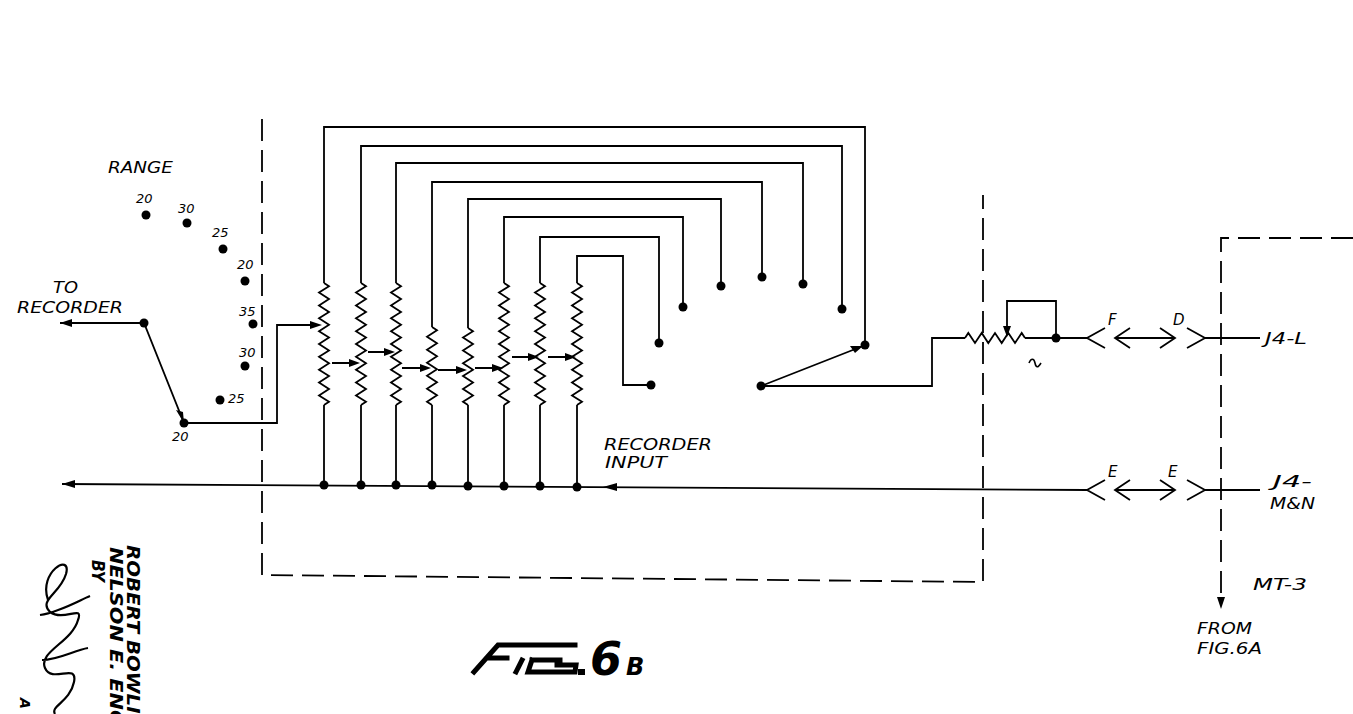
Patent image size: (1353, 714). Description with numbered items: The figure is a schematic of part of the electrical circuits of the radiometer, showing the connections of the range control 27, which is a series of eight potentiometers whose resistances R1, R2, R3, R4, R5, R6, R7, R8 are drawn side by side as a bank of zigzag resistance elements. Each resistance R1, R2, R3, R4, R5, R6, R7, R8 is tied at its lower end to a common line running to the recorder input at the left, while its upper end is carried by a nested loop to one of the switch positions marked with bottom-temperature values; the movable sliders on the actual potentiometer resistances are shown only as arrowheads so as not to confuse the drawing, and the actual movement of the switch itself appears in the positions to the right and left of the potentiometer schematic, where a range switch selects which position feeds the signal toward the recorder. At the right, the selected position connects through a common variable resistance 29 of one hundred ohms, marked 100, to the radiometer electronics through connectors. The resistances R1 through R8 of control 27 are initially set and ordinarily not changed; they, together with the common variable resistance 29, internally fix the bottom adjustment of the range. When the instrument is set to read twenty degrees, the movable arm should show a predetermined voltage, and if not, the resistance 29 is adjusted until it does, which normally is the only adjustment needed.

The range control 27 is at (641, 298).
The common variable resistance 29 is at (1026, 311).
The potentiometer resistance element 100 is at (1003, 351).
The potentiometer resistor R1 is at (323, 405).
The potentiometer resistor R2 is at (360, 405).
The potentiometer resistor R3 is at (395, 405).
The potentiometer resistor R4 is at (431, 427).
The potentiometer resistor R5 is at (467, 428).
The potentiometer resistor R6 is at (503, 405).
The potentiometer resistor R7 is at (539, 405).
The potentiometer resistor R8 is at (576, 405).